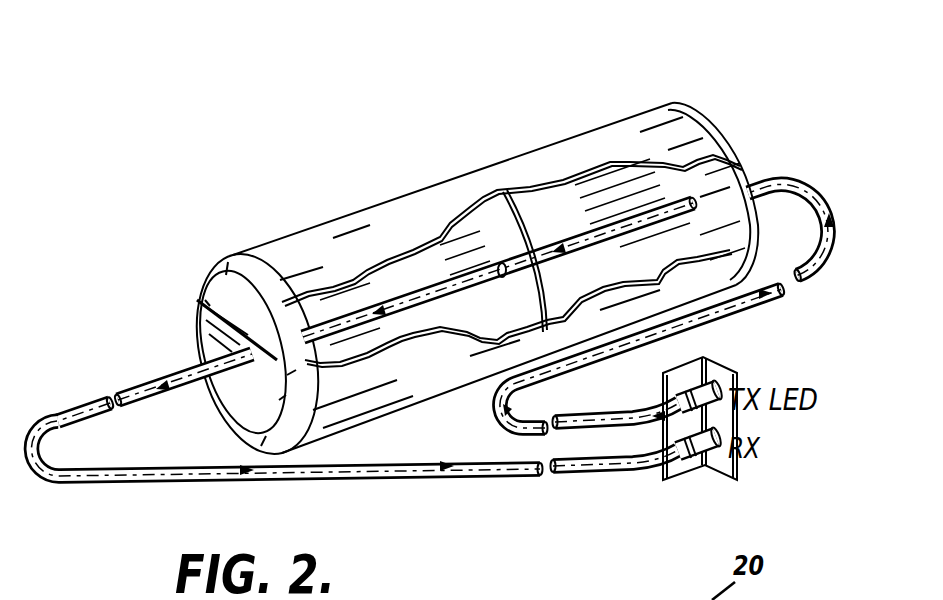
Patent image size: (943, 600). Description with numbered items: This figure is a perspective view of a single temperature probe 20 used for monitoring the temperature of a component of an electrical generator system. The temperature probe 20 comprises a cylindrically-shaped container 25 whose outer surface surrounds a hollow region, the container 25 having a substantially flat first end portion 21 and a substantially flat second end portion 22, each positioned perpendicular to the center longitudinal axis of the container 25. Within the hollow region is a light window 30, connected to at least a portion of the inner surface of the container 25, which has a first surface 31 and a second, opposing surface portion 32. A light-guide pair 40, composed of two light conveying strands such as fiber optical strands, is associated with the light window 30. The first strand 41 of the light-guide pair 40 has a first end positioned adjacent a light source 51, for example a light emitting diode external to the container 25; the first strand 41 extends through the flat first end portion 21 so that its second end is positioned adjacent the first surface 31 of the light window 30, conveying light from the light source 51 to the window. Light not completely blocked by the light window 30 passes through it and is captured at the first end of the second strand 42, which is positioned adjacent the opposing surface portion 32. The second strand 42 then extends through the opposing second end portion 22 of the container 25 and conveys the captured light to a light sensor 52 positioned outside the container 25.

The temperature probe 20 is at (459, 241).
The first end portion 21 is at (750, 207).
The second end portion 22 is at (250, 405).
The container 25 is at (283, 242).
The light window 30 is at (494, 305).
The first surface 31 is at (492, 188).
The second opposing surface portion 32 is at (447, 207).
The light-guide pair 40 is at (447, 323).
The first strand 41 is at (825, 272).
The second strand 42 is at (62, 428).
The light source 51 is at (700, 397).
The light sensor 52 is at (699, 460).